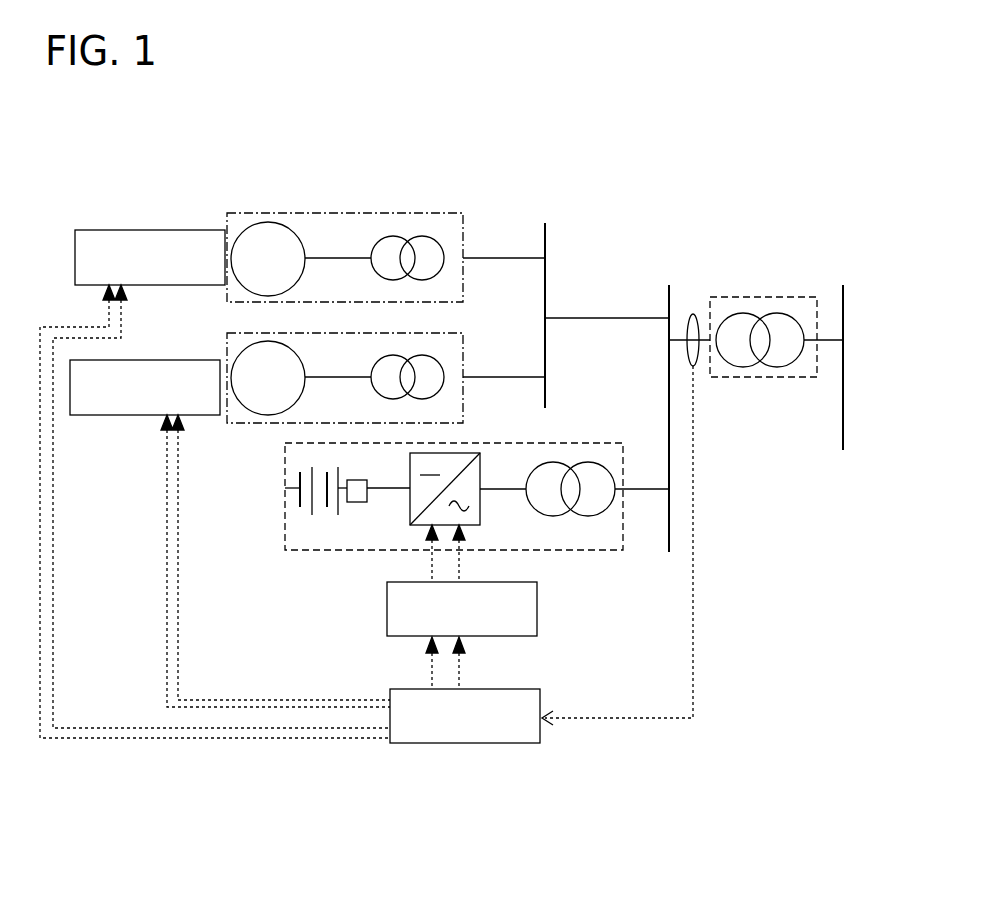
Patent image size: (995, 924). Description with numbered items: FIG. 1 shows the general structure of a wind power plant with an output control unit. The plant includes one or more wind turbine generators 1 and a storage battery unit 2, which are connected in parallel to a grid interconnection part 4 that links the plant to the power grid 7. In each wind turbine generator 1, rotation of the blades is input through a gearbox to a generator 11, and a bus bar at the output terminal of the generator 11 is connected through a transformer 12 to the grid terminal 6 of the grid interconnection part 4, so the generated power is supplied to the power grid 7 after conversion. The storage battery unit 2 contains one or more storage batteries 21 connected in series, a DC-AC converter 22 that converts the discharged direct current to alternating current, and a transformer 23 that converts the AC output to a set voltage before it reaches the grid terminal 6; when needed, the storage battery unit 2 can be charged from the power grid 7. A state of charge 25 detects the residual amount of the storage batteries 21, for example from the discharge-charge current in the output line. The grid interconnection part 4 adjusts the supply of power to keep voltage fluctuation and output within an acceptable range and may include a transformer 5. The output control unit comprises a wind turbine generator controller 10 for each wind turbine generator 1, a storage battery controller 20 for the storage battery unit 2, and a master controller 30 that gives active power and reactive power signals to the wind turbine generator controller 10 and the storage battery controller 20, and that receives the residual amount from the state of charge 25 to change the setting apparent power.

The wind turbine generator 1 is at (345, 213).
The storage battery unit 2 is at (603, 443).
The grid interconnection part 4 is at (773, 297).
The transformer 5 is at (743, 313).
The grid terminal 6 is at (692, 312).
The power grid 7 is at (843, 290).
The wind turbine generator controller 10 is at (163, 230).
The generator 11 is at (269, 222).
The transformer 12 is at (424, 236).
The storage battery controller 20 is at (540, 606).
The storage battery 21 is at (292, 487).
The DC-AC converter 22 is at (470, 455).
The transformer 23 is at (557, 462).
The state of charge 25 is at (357, 502).
The master controller 30 is at (487, 743).